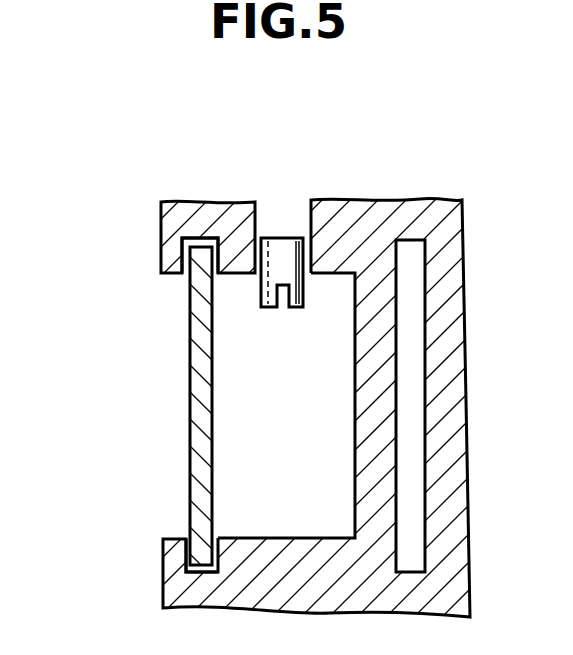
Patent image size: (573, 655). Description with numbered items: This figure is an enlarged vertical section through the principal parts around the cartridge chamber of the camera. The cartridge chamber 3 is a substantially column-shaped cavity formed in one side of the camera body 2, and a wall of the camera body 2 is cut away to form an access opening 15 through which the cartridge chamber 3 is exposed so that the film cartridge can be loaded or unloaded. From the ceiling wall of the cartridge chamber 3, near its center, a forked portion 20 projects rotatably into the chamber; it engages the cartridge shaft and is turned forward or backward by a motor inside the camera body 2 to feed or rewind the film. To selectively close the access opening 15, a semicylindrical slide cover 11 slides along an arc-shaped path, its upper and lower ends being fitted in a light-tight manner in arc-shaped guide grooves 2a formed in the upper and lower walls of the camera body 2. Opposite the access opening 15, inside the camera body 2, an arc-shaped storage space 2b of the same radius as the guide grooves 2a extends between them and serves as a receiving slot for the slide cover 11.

The camera body 2 is at (397, 216).
The guide grooves 2a is at (183, 249).
The storage space 2b is at (407, 305).
The cartridge chamber 3 is at (275, 457).
The slide cover 11 is at (192, 356).
The access opening 15 is at (139, 411).
The forked portion 20 is at (288, 238).